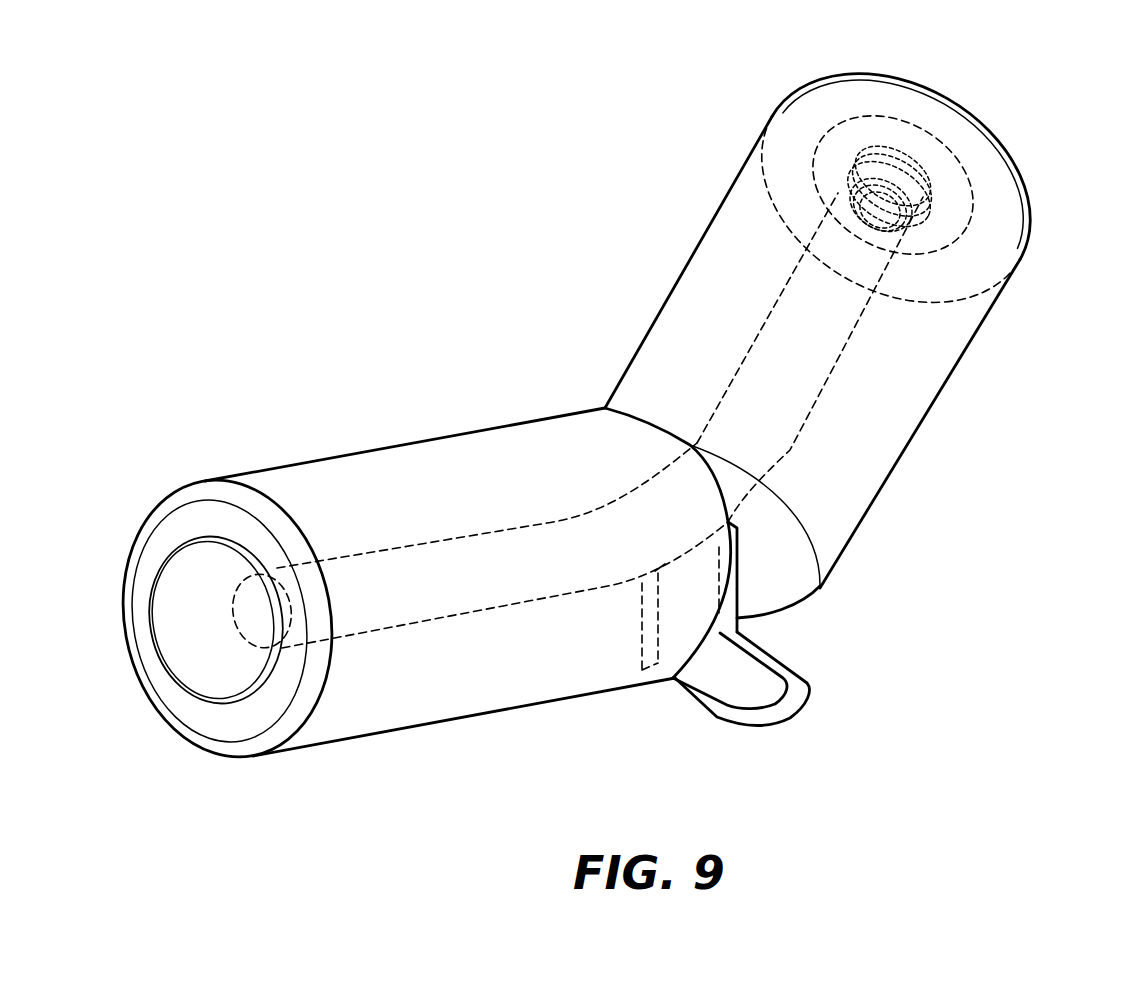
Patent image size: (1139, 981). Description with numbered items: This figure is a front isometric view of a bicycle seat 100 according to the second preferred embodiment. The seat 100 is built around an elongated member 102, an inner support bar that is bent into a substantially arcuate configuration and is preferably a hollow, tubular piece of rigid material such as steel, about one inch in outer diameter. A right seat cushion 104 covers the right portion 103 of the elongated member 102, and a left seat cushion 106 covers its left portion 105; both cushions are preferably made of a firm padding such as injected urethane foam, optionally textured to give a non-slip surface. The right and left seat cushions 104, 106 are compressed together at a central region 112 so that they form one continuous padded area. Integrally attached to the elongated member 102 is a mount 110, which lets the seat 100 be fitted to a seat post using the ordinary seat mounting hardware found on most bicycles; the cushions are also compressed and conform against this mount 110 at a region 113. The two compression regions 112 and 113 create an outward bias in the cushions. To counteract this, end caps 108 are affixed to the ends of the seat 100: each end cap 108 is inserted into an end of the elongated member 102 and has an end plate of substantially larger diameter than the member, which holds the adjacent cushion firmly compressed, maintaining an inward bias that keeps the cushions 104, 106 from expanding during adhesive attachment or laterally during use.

The seat 100 is at (204, 97).
The elongated member 102 is at (630, 493).
The right portion 103 is at (469, 572).
The right seat cushion 104 is at (325, 493).
The left portion 105 is at (773, 387).
The left seat cushion 106 is at (905, 347).
The end cap 108 is at (197, 575).
The mount 110 is at (822, 725).
The central region 112 is at (605, 408).
The region proximate the support 113 is at (790, 670).